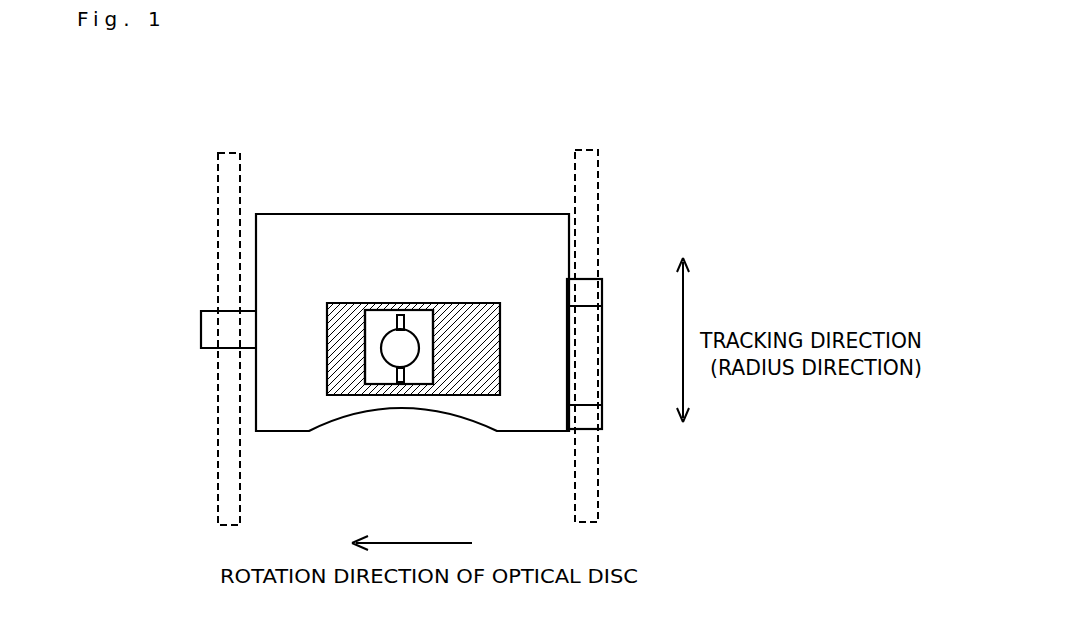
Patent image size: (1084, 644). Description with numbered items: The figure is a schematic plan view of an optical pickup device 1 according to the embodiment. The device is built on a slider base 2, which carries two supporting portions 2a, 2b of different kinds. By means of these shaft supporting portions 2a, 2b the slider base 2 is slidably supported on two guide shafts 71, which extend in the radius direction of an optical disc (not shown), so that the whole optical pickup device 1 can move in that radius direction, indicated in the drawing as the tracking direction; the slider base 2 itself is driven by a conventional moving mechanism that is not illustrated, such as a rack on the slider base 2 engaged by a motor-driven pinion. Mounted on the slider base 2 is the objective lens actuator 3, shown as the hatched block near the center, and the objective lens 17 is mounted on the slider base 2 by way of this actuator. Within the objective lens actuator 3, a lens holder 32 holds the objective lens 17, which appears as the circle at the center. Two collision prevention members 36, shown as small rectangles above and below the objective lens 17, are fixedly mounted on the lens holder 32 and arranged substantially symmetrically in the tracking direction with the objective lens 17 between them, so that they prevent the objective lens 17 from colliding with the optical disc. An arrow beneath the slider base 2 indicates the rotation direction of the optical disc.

The optical pickup device 1 is at (505, 142).
The slider base 2 is at (287, 432).
The supporting portion 2a is at (206, 336).
The supporting portion 2b is at (597, 294).
The objective lens actuator 3 is at (326, 350).
The lens holder 32 is at (382, 323).
The collision prevention members 36 is at (403, 378).
The objective lens 17 is at (410, 352).
The guide shafts 71 is at (228, 514).